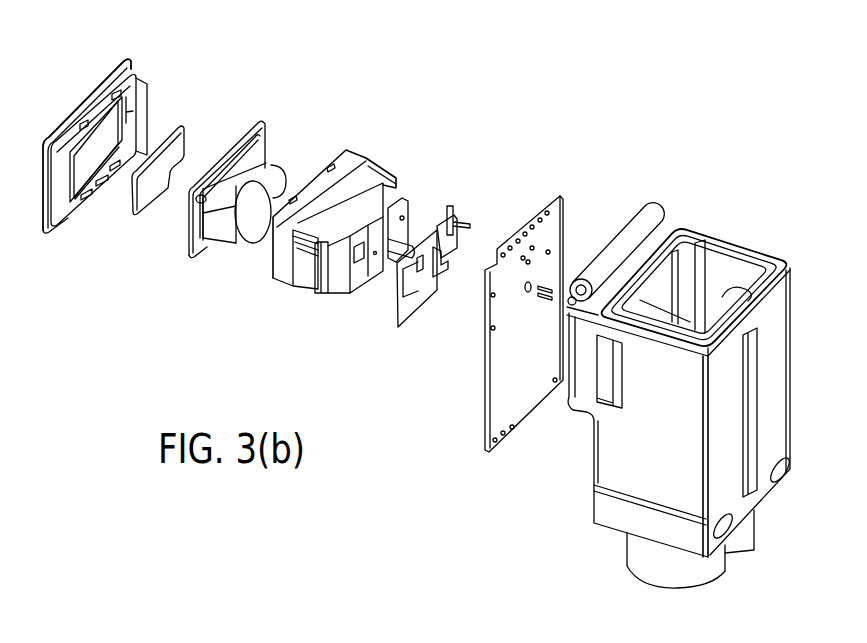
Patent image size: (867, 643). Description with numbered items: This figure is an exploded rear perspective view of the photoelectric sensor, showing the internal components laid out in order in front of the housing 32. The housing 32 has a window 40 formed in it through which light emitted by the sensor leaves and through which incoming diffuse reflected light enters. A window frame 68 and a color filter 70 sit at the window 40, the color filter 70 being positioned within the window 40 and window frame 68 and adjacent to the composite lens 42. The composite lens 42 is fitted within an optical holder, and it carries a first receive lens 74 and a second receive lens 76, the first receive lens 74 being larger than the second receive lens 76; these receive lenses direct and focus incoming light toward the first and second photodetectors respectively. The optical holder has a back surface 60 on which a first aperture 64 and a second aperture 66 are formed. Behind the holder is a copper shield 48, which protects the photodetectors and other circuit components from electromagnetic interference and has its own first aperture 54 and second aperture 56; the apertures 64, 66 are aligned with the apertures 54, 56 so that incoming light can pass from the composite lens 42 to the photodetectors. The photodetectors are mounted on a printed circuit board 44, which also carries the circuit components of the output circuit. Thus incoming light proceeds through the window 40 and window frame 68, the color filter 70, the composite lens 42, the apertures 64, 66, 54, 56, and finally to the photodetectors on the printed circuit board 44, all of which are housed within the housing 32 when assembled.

The housing 32 is at (742, 258).
The window 40 is at (648, 305).
The composite lens 42 is at (265, 158).
The printed circuit board 44 is at (561, 238).
The copper shield 48 is at (456, 213).
The first aperture 54 is at (419, 273).
The second aperture 56 is at (448, 245).
The back surface 60 is at (385, 246).
The first aperture 64 is at (375, 257).
The second aperture 66 is at (408, 212).
The window frame 68 is at (66, 220).
The color filter 70 is at (177, 143).
The first receive lens 74 is at (245, 240).
The second receive lens 76 is at (287, 176).